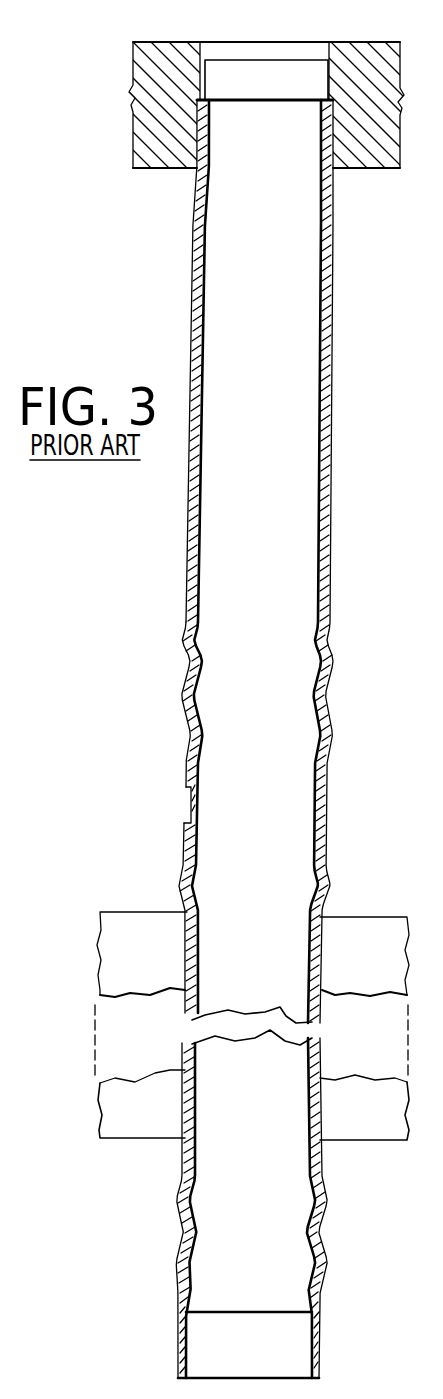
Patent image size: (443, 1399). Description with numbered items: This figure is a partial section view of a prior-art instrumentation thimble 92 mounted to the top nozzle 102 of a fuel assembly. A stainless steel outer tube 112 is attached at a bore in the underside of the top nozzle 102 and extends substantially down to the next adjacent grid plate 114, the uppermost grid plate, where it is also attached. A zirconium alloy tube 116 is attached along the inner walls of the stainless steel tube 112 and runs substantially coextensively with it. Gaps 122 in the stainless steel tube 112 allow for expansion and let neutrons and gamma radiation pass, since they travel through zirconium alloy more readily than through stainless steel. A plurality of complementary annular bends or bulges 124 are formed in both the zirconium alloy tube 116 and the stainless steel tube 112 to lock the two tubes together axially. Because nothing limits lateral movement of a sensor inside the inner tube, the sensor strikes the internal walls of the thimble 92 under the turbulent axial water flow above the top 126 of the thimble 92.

The instrumentation thimble 92 is at (225, 739).
The top nozzle 102 is at (171, 158).
The stainless steel outer tube 112 is at (163, 556).
The grid plate 114 is at (127, 928).
The zirconium alloy tube 116 is at (327, 282).
The gaps 122 is at (182, 805).
The annular bends or bulges 124 is at (187, 727).
The top of the thimble 126 is at (292, 98).